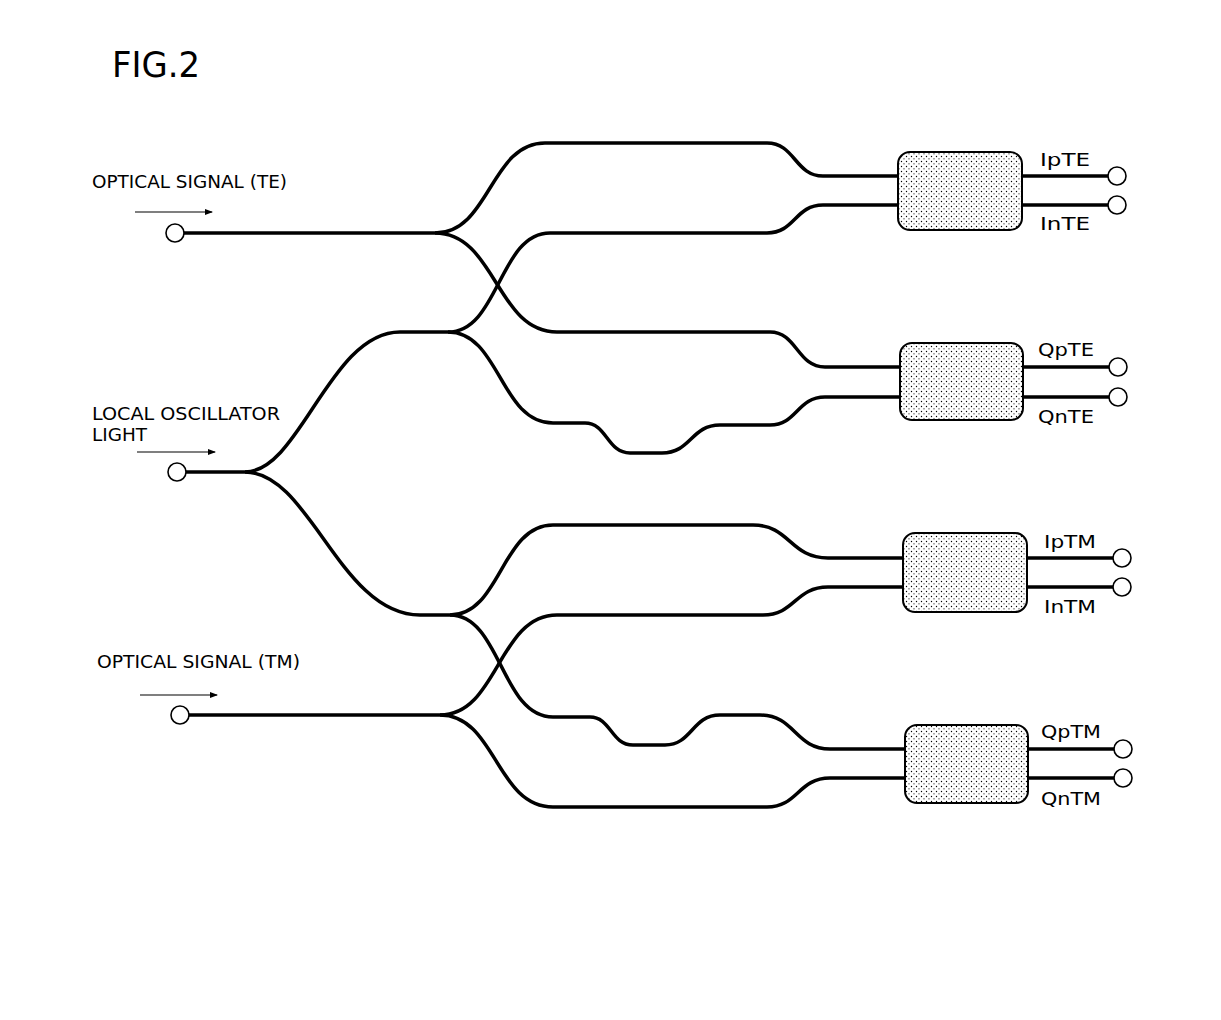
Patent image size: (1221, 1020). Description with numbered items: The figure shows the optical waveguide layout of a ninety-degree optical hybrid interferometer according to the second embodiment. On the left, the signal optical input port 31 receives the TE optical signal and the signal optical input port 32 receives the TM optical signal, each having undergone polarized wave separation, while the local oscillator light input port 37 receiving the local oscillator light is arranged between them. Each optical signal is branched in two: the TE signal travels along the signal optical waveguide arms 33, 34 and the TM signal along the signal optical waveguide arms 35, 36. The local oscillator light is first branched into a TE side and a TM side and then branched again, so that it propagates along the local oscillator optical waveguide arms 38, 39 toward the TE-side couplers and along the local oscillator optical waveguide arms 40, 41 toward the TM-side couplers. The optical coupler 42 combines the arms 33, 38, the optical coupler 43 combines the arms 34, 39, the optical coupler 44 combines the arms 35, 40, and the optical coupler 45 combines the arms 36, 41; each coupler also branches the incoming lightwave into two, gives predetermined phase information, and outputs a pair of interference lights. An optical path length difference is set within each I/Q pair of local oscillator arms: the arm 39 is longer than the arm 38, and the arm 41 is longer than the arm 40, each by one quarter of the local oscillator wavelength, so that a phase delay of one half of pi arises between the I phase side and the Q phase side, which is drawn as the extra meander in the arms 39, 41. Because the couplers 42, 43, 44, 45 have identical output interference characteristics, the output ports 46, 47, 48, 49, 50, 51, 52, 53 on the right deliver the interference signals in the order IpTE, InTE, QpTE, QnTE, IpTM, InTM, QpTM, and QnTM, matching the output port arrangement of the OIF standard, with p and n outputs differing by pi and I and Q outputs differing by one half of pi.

The signal optical input port 31 is at (168, 243).
The signal optical input port 32 is at (174, 726).
The signal optical waveguide arm 33 is at (661, 141).
The signal optical waveguide arm 34 is at (662, 330).
The signal optical waveguide arm 35 is at (665, 613).
The signal optical waveguide arm 36 is at (568, 805).
The local oscillator light input port 37 is at (172, 482).
The local oscillator optical waveguide arm 38 is at (661, 231).
The local oscillator optical waveguide arm 39 is at (586, 421).
The local oscillator optical waveguide arm 40 is at (753, 523).
The local oscillator optical waveguide arm 41 is at (760, 713).
The optical coupler 42 is at (952, 152).
The optical coupler 43 is at (946, 343).
The optical coupler 44 is at (949, 533).
The optical coupler 45 is at (951, 725).
The output port 46 is at (1121, 168).
The output port 47 is at (1125, 213).
The output port 48 is at (1122, 359).
The output port 49 is at (1124, 405).
The output port 50 is at (1126, 550).
The output port 51 is at (1128, 595).
The output port 52 is at (1128, 741).
The output port 53 is at (1130, 786).